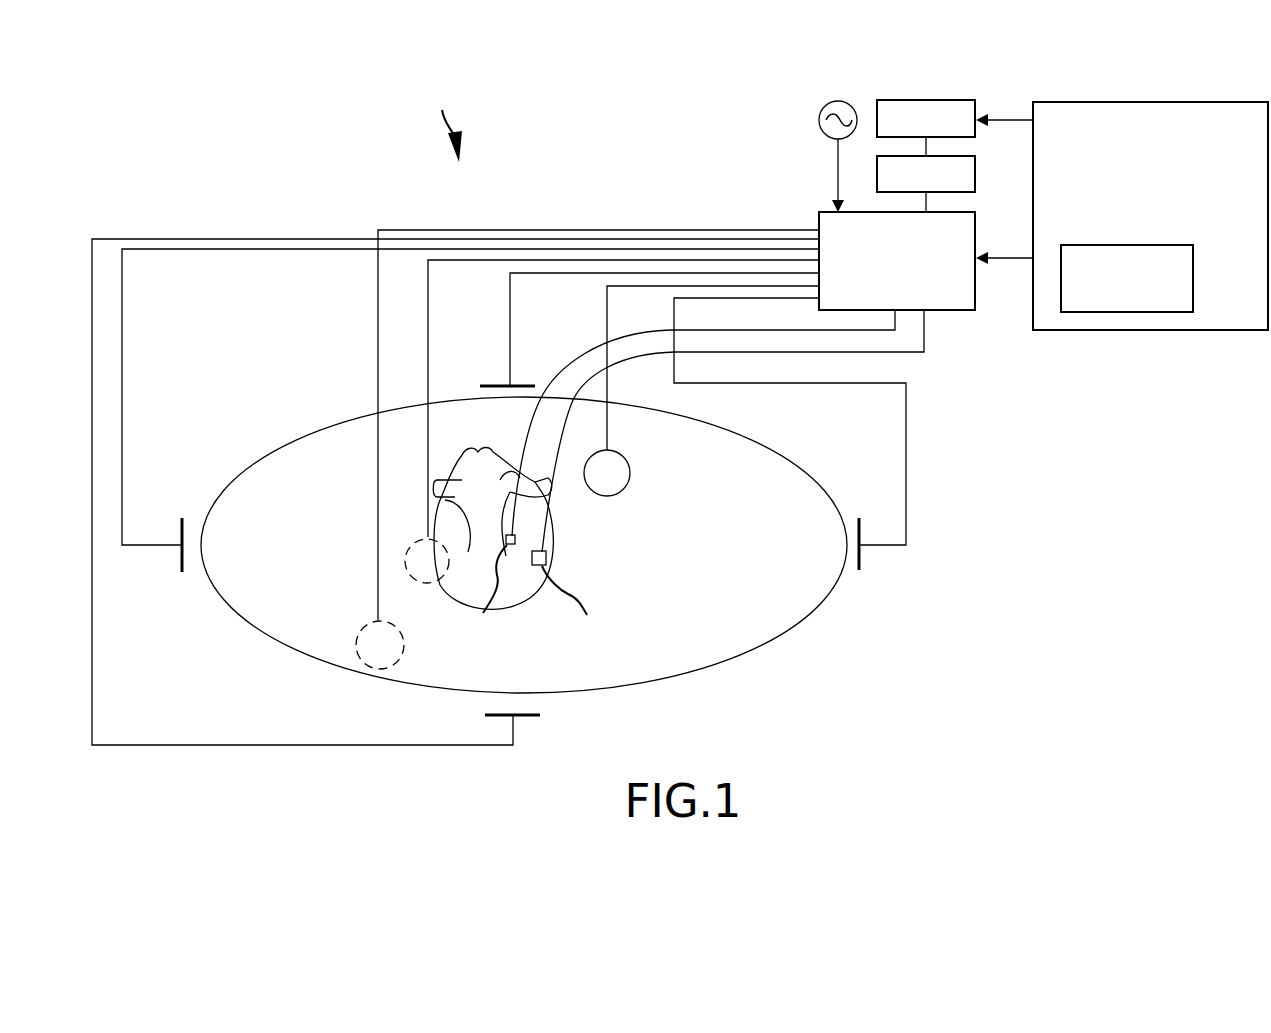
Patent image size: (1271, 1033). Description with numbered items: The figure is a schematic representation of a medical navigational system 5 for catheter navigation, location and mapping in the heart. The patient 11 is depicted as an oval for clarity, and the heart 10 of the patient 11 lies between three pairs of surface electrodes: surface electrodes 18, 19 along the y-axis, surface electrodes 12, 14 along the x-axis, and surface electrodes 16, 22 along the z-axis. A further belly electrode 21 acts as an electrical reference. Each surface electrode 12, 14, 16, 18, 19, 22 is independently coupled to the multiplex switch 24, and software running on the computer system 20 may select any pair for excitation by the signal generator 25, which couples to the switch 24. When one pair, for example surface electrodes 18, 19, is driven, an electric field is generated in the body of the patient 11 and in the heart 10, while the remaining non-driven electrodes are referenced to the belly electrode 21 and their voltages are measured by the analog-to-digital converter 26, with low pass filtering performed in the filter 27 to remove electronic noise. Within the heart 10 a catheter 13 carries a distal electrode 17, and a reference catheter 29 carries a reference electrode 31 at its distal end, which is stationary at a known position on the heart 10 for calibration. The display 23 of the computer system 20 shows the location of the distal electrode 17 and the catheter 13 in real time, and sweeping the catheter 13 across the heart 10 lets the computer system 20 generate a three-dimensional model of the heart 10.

The medical navigational system 5 is at (448, 121).
The heart 10 is at (550, 555).
The patient 11 is at (757, 440).
The surface electrode 12 is at (497, 383).
The catheter 13 is at (925, 337).
The surface electrode 14 is at (515, 725).
The surface electrode 16 is at (612, 424).
The distal electrode 17 is at (566, 599).
The surface electrode 18 is at (180, 562).
The surface electrode 19 is at (863, 557).
The computer system 20 is at (1251, 316).
The belly electrode 21 is at (377, 560).
The surface electrode 22 is at (428, 310).
The display 23 is at (1141, 303).
The multiplex switch 24 is at (884, 283).
The signal generator 25 is at (820, 112).
The analog-to-digital converter 26 is at (940, 100).
The filter 27 is at (976, 177).
The reference catheter 29 is at (527, 413).
The reference electrode 31 is at (487, 596).